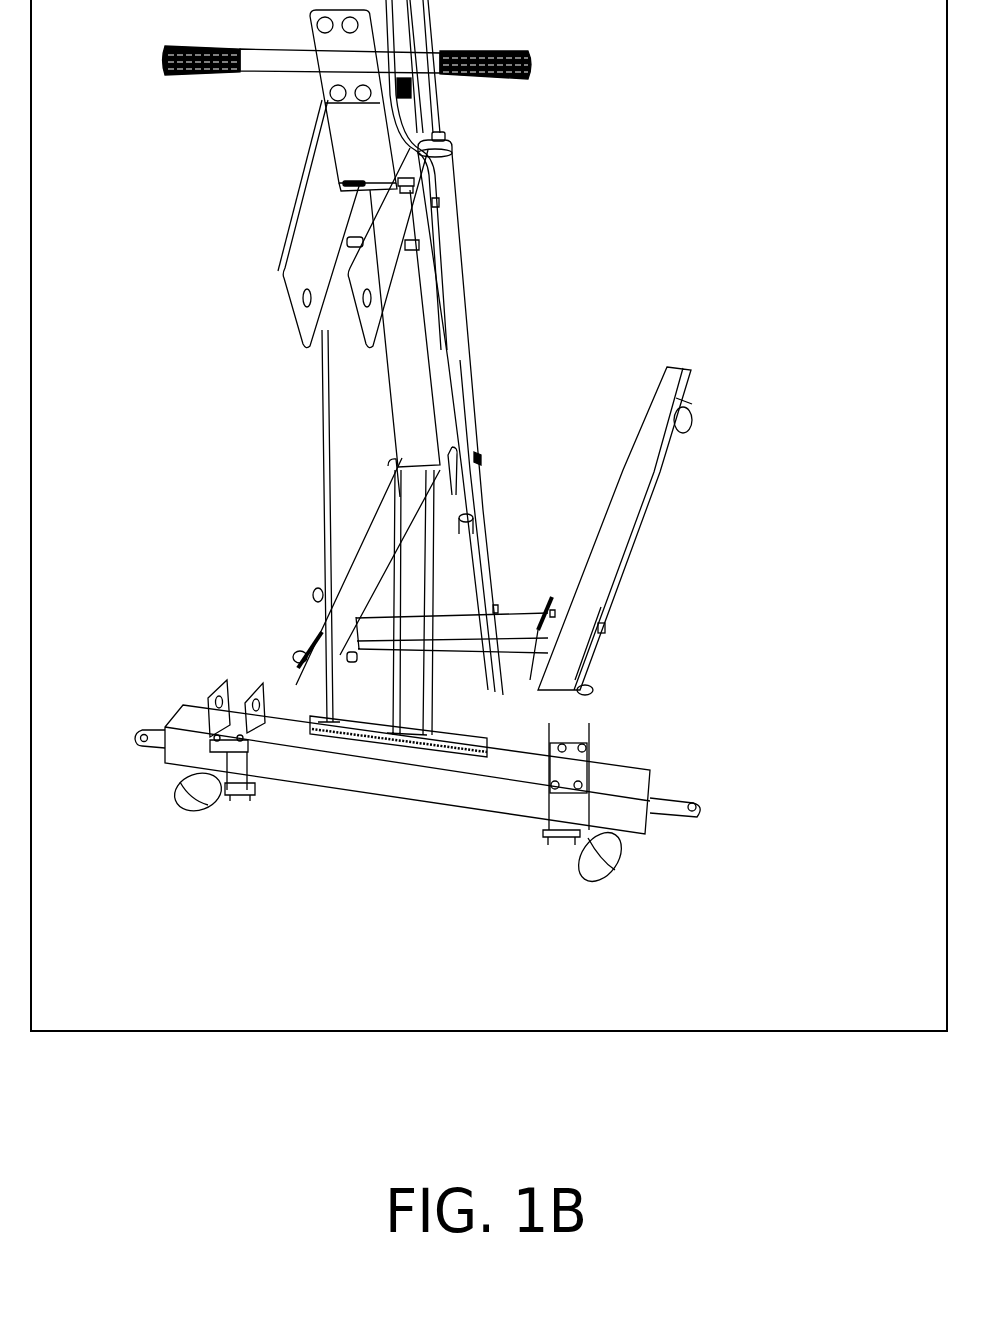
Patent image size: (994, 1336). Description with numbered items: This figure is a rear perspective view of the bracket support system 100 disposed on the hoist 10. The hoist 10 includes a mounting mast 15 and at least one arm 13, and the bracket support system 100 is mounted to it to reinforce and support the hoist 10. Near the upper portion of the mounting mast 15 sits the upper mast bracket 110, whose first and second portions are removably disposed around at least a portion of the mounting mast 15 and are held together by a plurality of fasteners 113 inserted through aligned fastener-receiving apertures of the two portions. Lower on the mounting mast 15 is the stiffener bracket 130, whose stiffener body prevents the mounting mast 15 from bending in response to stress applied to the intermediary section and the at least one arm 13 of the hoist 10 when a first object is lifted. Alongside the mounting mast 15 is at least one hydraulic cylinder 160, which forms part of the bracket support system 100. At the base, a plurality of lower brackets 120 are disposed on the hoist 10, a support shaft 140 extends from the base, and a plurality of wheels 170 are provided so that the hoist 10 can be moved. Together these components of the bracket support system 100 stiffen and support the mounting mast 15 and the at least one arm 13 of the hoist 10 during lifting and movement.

The bracket support system 100 is at (772, 112).
The hoist 10 is at (615, 775).
The arm 13 is at (385, 468).
The mounting mast 15 is at (415, 355).
The upper mast bracket 110 is at (320, 258).
The fasteners 113 is at (335, 188).
The lower brackets 120 is at (230, 727).
The stiffener bracket 130 is at (415, 605).
The support shaft 140 is at (680, 803).
The hydraulic cylinder 160 is at (445, 182).
The wheels 170 is at (205, 790).